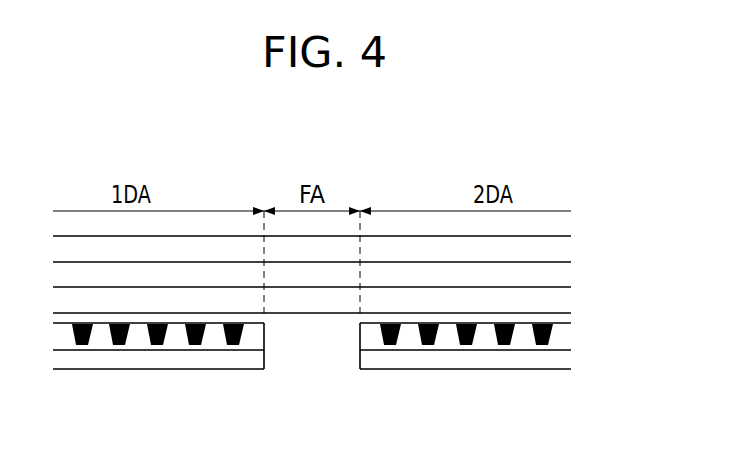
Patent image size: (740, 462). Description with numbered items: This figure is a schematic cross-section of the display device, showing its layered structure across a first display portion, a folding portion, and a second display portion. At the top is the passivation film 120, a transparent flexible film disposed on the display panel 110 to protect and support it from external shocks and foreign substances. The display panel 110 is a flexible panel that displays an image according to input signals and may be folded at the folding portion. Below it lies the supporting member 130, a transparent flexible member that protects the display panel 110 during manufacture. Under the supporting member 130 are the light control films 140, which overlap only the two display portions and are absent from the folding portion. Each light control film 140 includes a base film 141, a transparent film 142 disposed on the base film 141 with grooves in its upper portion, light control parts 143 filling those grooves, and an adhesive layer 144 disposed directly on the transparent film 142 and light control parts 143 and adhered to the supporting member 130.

The display panel 110 is at (559, 277).
The passivation film 120 is at (559, 246).
The supporting member 130 is at (559, 303).
The light control film 140 is at (347, 370).
The base film 141 is at (416, 361).
The transparent film 142 is at (487, 338).
The light control part 143 is at (194, 345).
The adhesive layer 144 is at (104, 317).